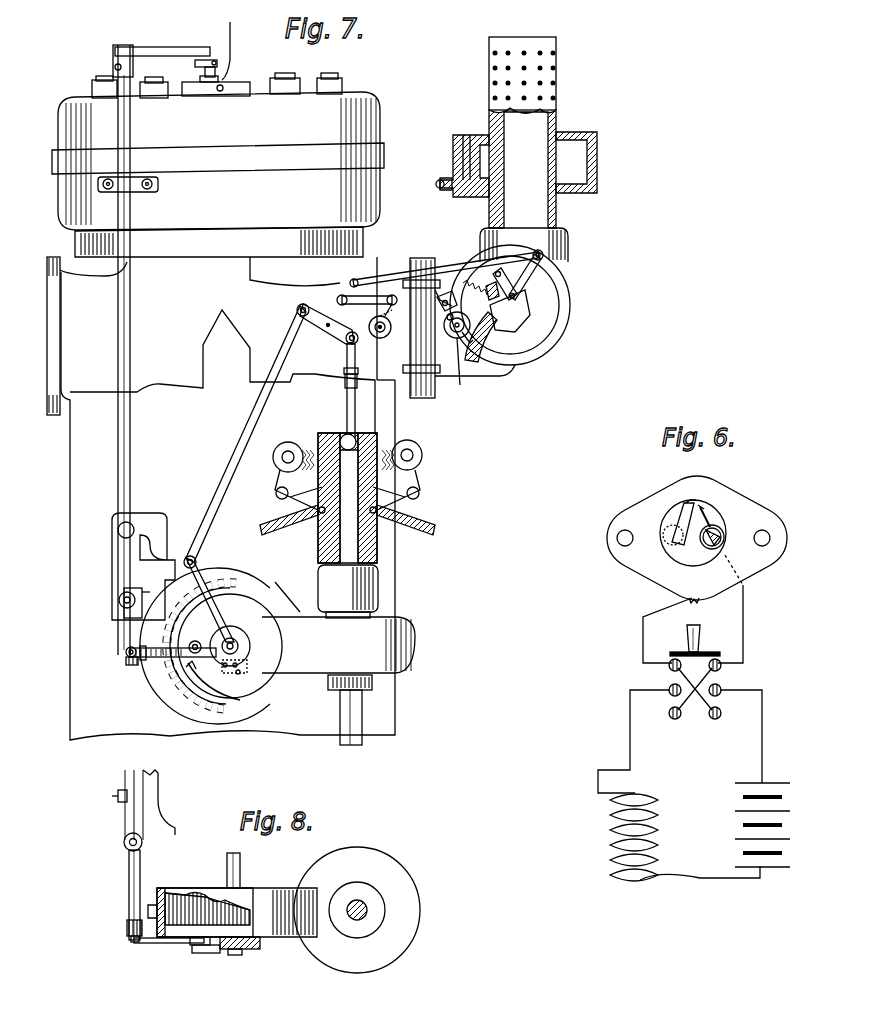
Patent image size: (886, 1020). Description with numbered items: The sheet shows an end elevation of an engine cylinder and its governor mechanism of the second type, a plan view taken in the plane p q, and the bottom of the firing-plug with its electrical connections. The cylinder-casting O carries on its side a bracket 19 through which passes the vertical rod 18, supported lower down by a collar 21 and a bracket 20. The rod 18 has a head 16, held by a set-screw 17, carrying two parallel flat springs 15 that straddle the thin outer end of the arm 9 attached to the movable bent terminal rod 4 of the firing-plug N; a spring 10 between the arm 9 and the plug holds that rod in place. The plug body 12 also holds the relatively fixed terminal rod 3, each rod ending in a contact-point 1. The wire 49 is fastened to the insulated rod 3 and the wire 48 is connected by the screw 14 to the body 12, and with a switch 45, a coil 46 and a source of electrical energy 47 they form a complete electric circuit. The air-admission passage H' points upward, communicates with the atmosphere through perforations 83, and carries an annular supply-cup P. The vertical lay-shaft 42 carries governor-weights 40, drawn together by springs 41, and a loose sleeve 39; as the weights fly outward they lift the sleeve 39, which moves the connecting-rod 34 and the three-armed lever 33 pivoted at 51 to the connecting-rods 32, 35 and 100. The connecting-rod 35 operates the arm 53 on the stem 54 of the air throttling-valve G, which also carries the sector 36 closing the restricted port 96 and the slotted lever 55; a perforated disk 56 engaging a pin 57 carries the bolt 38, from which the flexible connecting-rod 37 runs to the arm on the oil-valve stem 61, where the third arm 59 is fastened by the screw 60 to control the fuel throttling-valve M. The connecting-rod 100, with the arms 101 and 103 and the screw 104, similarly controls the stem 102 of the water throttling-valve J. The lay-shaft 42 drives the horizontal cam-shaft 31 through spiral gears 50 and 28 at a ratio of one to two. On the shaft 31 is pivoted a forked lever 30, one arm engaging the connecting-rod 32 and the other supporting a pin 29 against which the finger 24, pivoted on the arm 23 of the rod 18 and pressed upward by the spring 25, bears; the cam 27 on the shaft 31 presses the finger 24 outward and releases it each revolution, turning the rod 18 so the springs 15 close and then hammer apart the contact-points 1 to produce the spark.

In FIG. 7, the cylinder-casting O is at (218, 165).
In FIG. 7, the vertical rod 18 is at (131, 412).
In FIG. 8, the vertical rod 18 is at (145, 845).
In FIG. 7, the head 16 is at (113, 55).
In FIG. 7, the set-screw 17 is at (115, 68).
In FIG. 7, the flat springs 15 is at (162, 43).
In FIG. 7, the arm 9 is at (195, 64).
In FIG. 7, the wire 49 is at (222, 48).
In FIG. 6, the wire 49 is at (741, 609).
In FIG. 7, the spring 10 is at (236, 82).
In FIG. 7, the firing-plug N is at (250, 82).
In FIG. 6, the firing-plug N is at (693, 533).
In FIG. 7, the screw 14 is at (217, 88).
In FIG. 6, the screw 14 is at (703, 606).
In FIG. 7, the bracket 19 is at (135, 192).
In FIG. 7, the connecting-rod 32 is at (246, 434).
In FIG. 7, the pivot 51 is at (303, 326).
In FIG. 7, the three-armed lever 33 is at (327, 328).
In FIG. 7, the connecting-rod 100 is at (360, 296).
In FIG. 7, the arm 101 is at (383, 313).
In FIG. 7, the arm 103 is at (369, 327).
In FIG. 7, the screw 104 is at (393, 331).
In FIG. 7, the water-valve stem 102 is at (358, 340).
In FIG. 7, the water throttling-valve J is at (377, 346).
In FIG. 7, the connecting-rod 34 is at (347, 410).
In FIG. 7, the connecting-rod 35 is at (395, 278).
In FIG. 7, the bolt 38 is at (480, 275).
In FIG. 7, the connecting-rod 37 is at (455, 300).
In FIG. 7, the arm 53 is at (437, 302).
In FIG. 7, the fuel throttling-valve M is at (455, 336).
In FIG. 7, the screw 60 is at (447, 319).
In FIG. 7, the oil-valve stem 61 is at (473, 343).
In FIG. 7, the third arm 59 is at (463, 368).
In FIG. 7, the air throttling-valve G is at (502, 302).
In FIG. 7, the pin 57 is at (517, 322).
In FIG. 7, the restricted opening or port 96 is at (510, 311).
In FIG. 7, the sector 36 is at (481, 292).
In FIG. 7, the lever 55 is at (513, 287).
In FIG. 7, the stem 54 is at (513, 297).
In FIG. 7, the perforated disk 56 is at (543, 255).
In FIG. 7, the perforations 83 is at (548, 47).
In FIG. 7, the air-admission passage H' is at (522, 168).
In FIG. 7, the supply-cup P is at (576, 162).
In FIG. 7, the loose sleeve 39 is at (377, 438).
In FIG. 7, the governor-weights 40 is at (416, 455).
In FIG. 7, the springs 41 is at (347, 481).
In FIG. 7, the section plane q is at (28, 637).
In FIG. 7, the spiral gear 50 is at (372, 683).
In FIG. 8, the spiral gear 50 is at (357, 910).
In FIG. 7, the lay-shaft 42 is at (355, 744).
In FIG. 8, the lay-shaft 42 is at (368, 912).
In FIG. 7, the cam-shaft 31 is at (268, 605).
In FIG. 8, the cam-shaft 31 is at (248, 965).
In FIG. 7, the finger 24 is at (160, 680).
In FIG. 8, the finger 24 is at (165, 943).
In FIG. 7, the cam 27 is at (250, 680).
In FIG. 7, the spiral gear 28 is at (217, 646).
In FIG. 8, the spiral gear 28 is at (192, 896).
In FIG. 7, the forked lever 30 is at (216, 624).
In FIG. 8, the forked lever 30 is at (210, 953).
In FIG. 7, the pin 29 is at (196, 653).
In FIG. 8, the pin 29 is at (191, 954).
In FIG. 7, the arm 23 is at (126, 652).
In FIG. 8, the arm 23 is at (129, 890).
In FIG. 7, the spring 25 is at (142, 660).
In FIG. 8, the spring 25 is at (127, 932).
In FIG. 7, the bracket 20 is at (136, 571).
In FIG. 8, the bracket 20 is at (125, 820).
In FIG. 7, the collar 21 is at (124, 594).
In FIG. 8, the collar 21 is at (124, 846).
In FIG. 6, the body 12 is at (697, 538).
In FIG. 6, the movable bent terminal rod 4 is at (679, 522).
In FIG. 6, the fixed terminal rod 3 is at (730, 537).
In FIG. 6, the contact-point 1 is at (703, 513).
In FIG. 6, the wire 48 is at (655, 630).
In FIG. 6, the switch 45 is at (695, 672).
In FIG. 6, the coil 46 is at (670, 785).
In FIG. 6, the source of electrical energy 47 is at (765, 778).